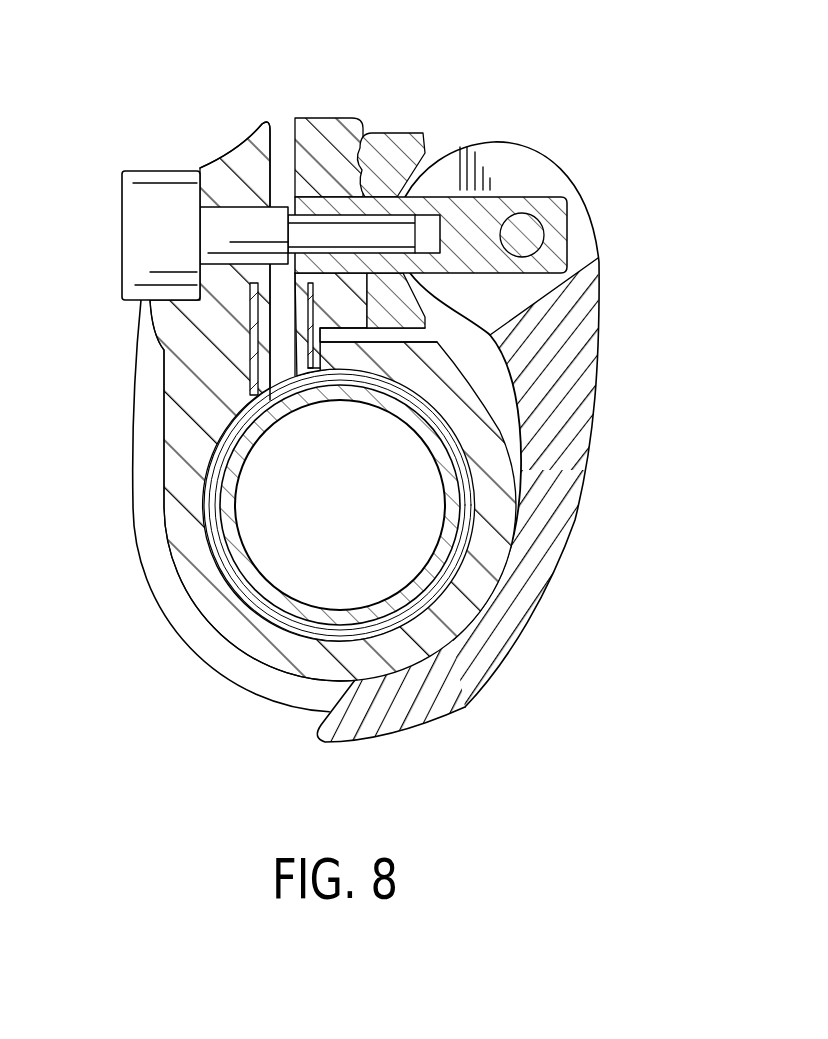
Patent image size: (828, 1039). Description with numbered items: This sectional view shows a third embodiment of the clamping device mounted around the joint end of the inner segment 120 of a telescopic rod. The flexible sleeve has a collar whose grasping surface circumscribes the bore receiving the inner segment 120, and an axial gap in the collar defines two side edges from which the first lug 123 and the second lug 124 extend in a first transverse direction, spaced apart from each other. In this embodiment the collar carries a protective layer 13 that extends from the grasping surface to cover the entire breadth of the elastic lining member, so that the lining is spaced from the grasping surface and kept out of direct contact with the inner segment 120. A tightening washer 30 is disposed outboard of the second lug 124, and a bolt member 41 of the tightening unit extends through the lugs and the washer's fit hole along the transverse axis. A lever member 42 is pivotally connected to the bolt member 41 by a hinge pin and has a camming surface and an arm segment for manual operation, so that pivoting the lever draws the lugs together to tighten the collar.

The protective layer 13 is at (287, 617).
The tightening washer 30 is at (391, 126).
The bolt member 41 is at (152, 170).
The lever member 42 is at (585, 448).
The inner segment 120 is at (447, 525).
The first lug 123 is at (238, 135).
The second lug 124 is at (318, 135).